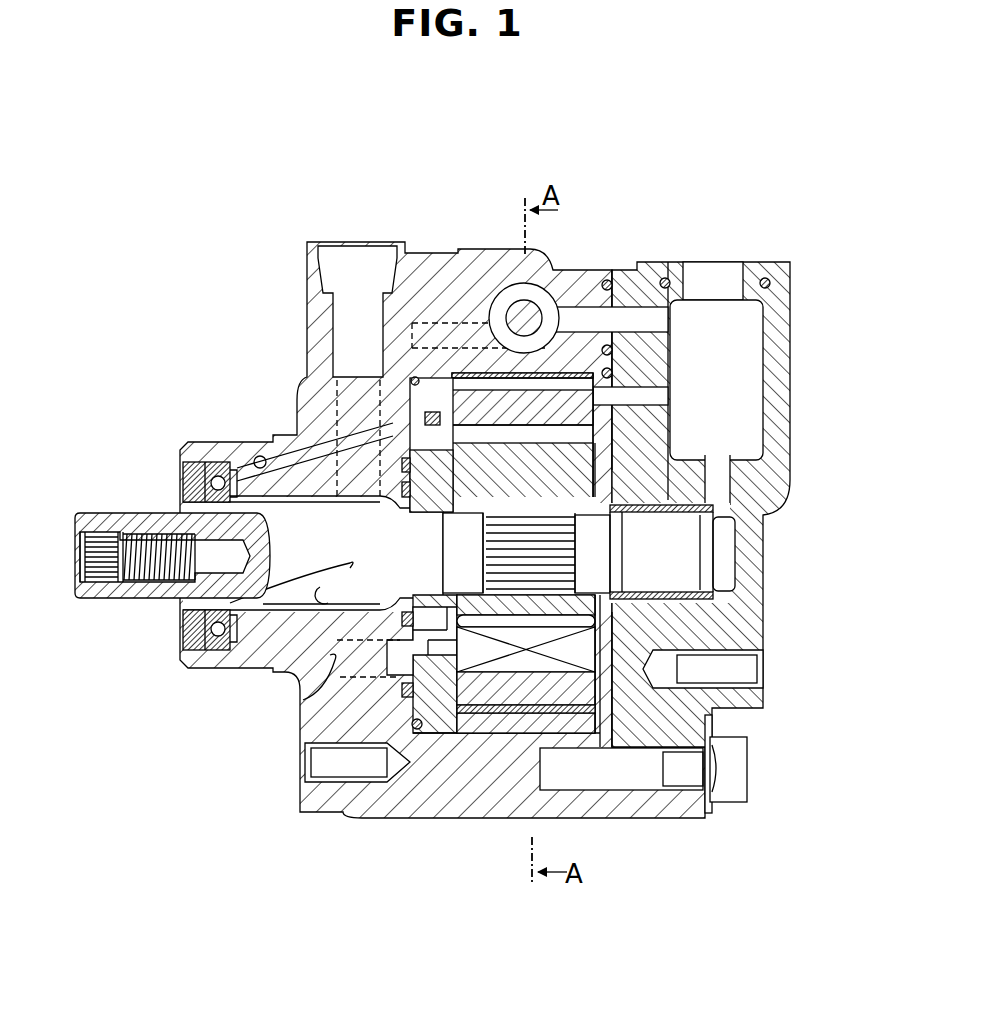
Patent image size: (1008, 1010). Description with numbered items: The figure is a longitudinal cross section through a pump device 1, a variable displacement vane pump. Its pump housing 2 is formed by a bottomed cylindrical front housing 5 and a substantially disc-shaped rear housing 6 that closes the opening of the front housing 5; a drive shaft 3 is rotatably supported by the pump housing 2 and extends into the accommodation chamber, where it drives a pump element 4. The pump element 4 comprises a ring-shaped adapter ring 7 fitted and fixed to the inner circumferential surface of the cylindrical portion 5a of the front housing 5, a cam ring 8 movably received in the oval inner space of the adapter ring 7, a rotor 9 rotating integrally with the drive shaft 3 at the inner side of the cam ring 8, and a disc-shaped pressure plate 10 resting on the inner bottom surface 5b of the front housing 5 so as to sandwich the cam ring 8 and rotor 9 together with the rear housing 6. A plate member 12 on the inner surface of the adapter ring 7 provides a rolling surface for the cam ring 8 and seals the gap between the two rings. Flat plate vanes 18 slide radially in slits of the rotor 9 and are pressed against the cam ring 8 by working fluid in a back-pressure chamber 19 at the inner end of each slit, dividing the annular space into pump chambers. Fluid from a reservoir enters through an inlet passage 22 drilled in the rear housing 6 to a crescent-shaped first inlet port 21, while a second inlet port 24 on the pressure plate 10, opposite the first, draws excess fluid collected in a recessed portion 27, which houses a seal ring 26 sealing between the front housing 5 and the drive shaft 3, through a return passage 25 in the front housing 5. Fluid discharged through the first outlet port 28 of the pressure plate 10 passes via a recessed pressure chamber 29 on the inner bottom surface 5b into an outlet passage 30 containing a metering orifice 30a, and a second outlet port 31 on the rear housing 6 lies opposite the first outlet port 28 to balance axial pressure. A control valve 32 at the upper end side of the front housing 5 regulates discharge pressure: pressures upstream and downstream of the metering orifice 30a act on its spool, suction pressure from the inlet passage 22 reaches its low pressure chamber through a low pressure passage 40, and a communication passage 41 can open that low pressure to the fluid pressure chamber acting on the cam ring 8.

The pump device 1 is at (795, 246).
The pump housing 2 is at (665, 165).
The drive shaft 3 is at (128, 513).
The pump element 4 is at (464, 750).
The front housing 5 is at (590, 268).
The cylindrical portion 5a is at (533, 665).
The inner bottom surface 5b is at (373, 742).
The rear housing 6 is at (652, 262).
The adapter ring 7 is at (583, 706).
The cam ring 8 is at (617, 760).
The rotor 9 is at (475, 460).
The pressure plate 10 is at (432, 700).
The plate member 12 is at (485, 705).
The vane 18 is at (560, 725).
The back-pressure chamber 19 is at (625, 592).
The first inlet port 21 is at (603, 432).
The inlet passage 22 is at (768, 340).
The second inlet port 24 is at (392, 405).
The return passage 25 is at (258, 458).
The seal ring 26 is at (205, 645).
The recessed portion 27 is at (205, 463).
The first outlet port 28 is at (446, 672).
The pressure chamber 29 is at (300, 700).
The outlet passage 30 is at (268, 668).
The metering orifice 30a is at (412, 335).
The second outlet port 31 is at (640, 660).
The control valve 32 is at (517, 281).
The low pressure passage 40 is at (672, 300).
The communication passage 41 is at (560, 300).